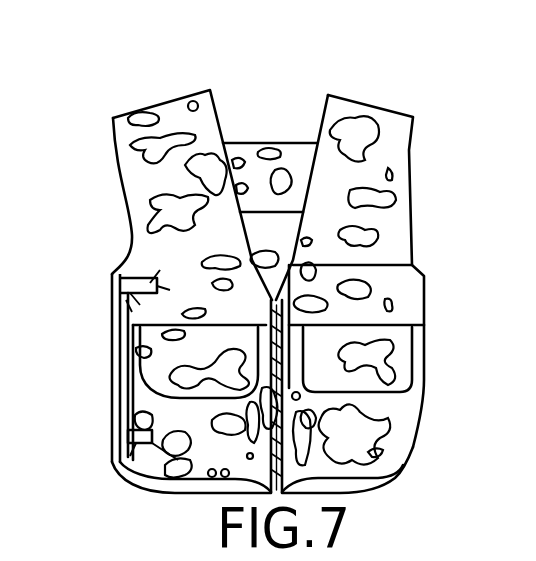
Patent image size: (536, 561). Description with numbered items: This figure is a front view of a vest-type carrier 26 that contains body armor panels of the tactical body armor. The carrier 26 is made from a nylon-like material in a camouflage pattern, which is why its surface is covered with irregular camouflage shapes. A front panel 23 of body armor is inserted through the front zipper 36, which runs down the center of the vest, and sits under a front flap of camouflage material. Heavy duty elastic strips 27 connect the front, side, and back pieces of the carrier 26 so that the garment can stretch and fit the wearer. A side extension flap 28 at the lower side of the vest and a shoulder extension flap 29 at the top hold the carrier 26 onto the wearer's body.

The front panel 23 is at (263, 140).
The shoulder extension flap 29 is at (390, 130).
The vest-type carrier 26 is at (112, 298).
The front zipper 36 is at (285, 370).
The heavy duty elastic strips 27 is at (123, 455).
The side extension flap 28 is at (392, 445).